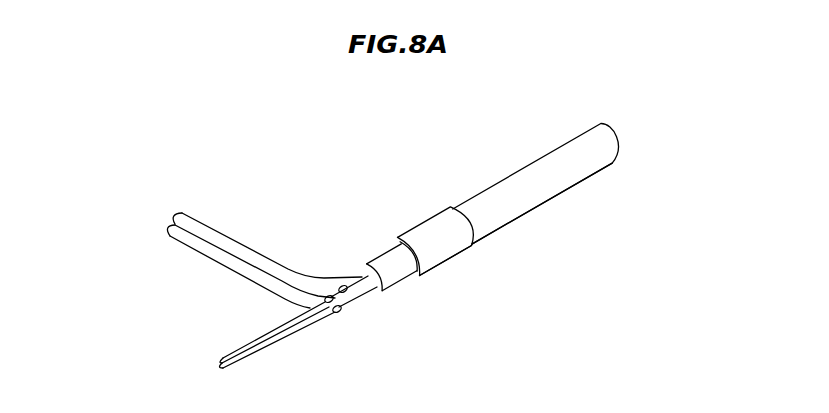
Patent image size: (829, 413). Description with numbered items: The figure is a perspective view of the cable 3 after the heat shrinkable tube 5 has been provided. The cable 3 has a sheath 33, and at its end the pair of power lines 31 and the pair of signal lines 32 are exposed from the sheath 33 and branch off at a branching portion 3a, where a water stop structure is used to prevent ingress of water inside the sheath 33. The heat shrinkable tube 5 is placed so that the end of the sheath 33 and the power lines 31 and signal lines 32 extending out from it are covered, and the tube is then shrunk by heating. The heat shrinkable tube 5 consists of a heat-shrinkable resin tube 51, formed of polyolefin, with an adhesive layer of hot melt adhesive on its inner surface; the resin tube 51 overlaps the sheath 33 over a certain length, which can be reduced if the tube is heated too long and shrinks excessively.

The cable 3 is at (615, 142).
The sheath 33 is at (595, 167).
The heat shrinkable tube 5 is at (437, 223).
The resin tube 51 is at (455, 248).
The branching portion 3a is at (417, 297).
The power lines 31 is at (223, 257).
The signal lines 32 is at (250, 347).